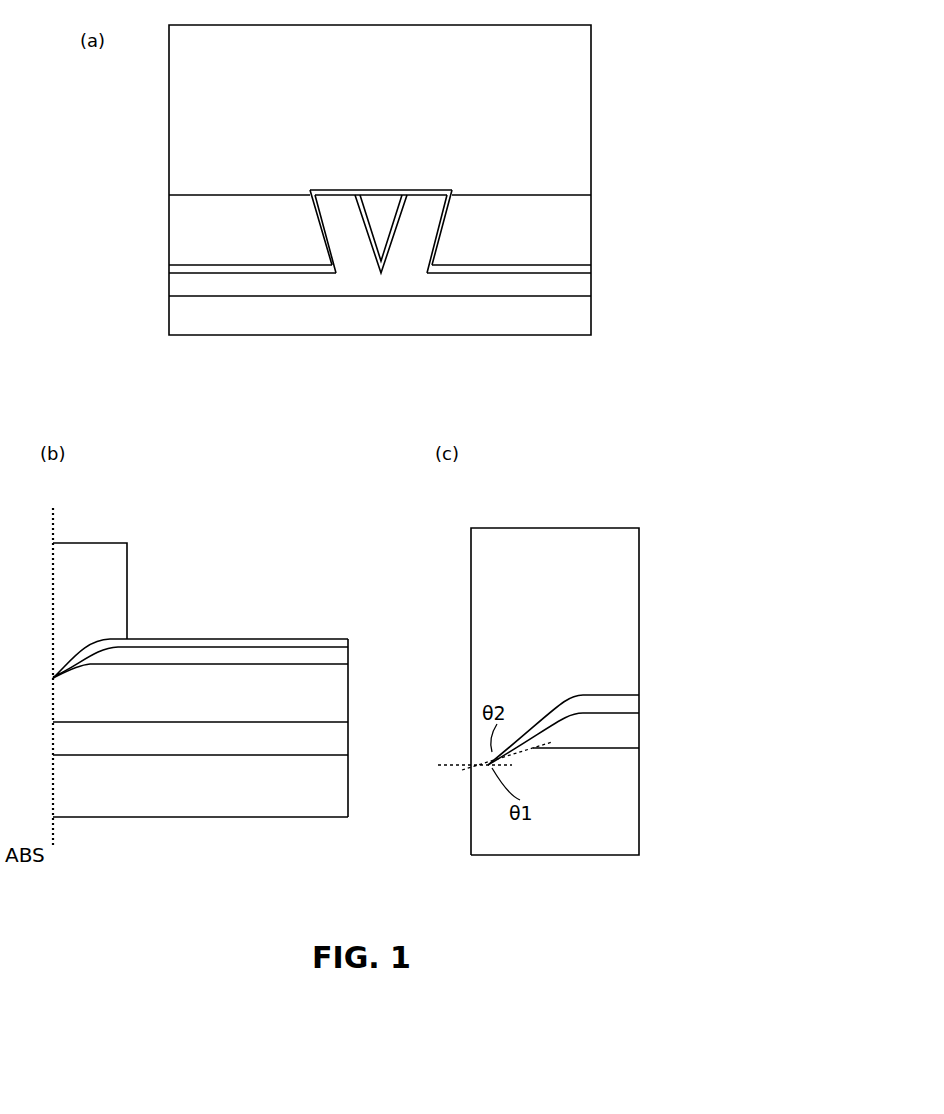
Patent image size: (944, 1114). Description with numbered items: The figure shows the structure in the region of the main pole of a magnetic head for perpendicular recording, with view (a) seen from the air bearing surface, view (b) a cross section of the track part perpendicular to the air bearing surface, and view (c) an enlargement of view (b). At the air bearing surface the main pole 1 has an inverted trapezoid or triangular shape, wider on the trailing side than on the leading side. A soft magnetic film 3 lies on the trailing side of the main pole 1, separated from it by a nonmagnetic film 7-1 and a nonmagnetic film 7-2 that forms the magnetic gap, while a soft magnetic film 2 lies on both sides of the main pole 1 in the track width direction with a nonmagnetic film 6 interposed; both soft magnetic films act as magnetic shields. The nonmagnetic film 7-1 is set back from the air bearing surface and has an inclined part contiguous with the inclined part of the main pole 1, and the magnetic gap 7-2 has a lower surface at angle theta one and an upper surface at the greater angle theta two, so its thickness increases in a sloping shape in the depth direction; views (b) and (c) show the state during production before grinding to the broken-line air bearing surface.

The main pole 1 is at (378, 217).
The soft magnetic film 2 is at (570, 236).
The soft magnetic film 3 is at (568, 116).
The nonmagnetic film 6 is at (347, 242).
The nonmagnetic film 7-1 is at (338, 659).
The nonmagnetic film (magnetic gap) 7-2 is at (443, 190).